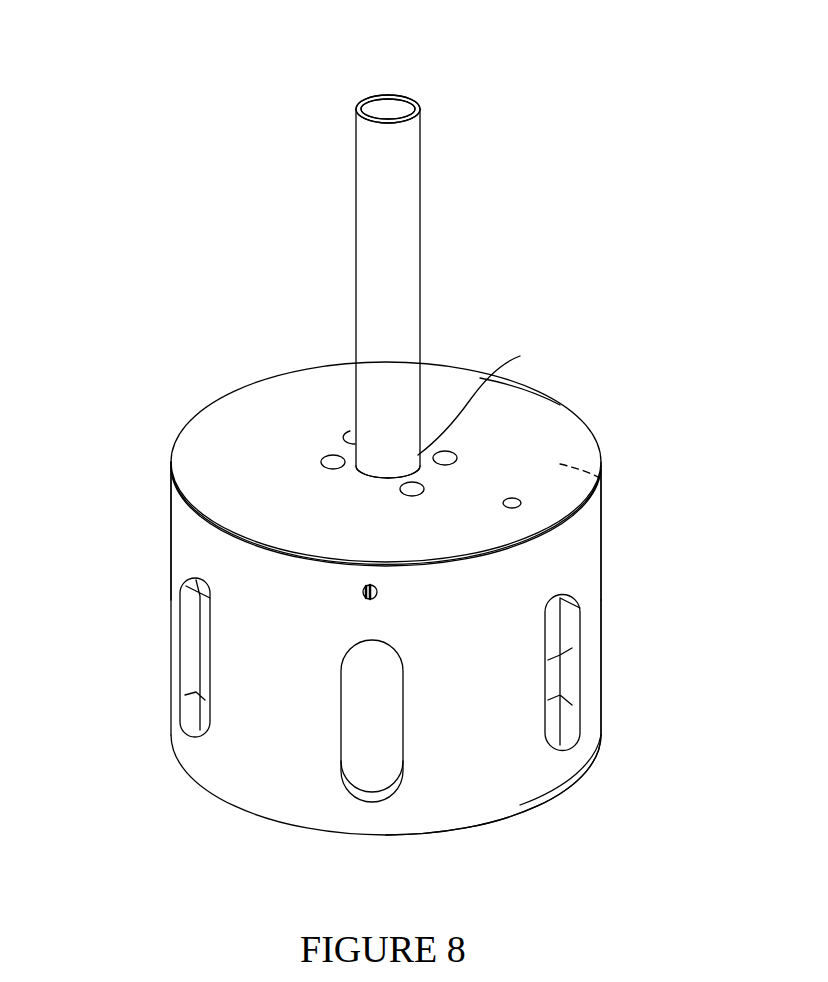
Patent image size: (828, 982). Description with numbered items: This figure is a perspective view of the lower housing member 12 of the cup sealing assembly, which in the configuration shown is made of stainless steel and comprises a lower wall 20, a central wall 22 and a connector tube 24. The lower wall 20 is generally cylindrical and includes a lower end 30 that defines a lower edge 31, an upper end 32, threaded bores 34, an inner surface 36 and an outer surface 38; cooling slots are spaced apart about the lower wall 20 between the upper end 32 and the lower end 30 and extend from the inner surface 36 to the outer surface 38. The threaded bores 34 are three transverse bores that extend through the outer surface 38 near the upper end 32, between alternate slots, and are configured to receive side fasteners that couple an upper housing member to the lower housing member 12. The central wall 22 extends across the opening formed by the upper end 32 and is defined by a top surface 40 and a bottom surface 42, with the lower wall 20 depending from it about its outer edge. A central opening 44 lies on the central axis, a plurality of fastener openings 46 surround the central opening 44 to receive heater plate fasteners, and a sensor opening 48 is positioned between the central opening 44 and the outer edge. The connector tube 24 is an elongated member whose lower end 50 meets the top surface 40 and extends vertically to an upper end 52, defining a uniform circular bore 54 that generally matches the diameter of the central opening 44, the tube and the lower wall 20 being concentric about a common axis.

The lower housing member 12 is at (128, 293).
The lower wall 20 is at (605, 514).
The central wall 22 is at (562, 440).
The connector tube 24 is at (424, 236).
The lower end 30 is at (606, 731).
The lower edge 31 is at (583, 768).
The upper end 32 is at (166, 497).
The threaded bores 34 is at (360, 598).
The inner surface 36 is at (552, 650).
The outer surface 38 is at (588, 540).
The top surface 40 is at (546, 406).
The bottom surface 42 is at (601, 480).
The central opening 44 is at (489, 397).
The fastener openings 46 is at (322, 460).
The sensor opening 48 is at (503, 504).
The lower end 50 is at (368, 481).
The upper end 52 is at (415, 98).
The bore 54 is at (383, 106).